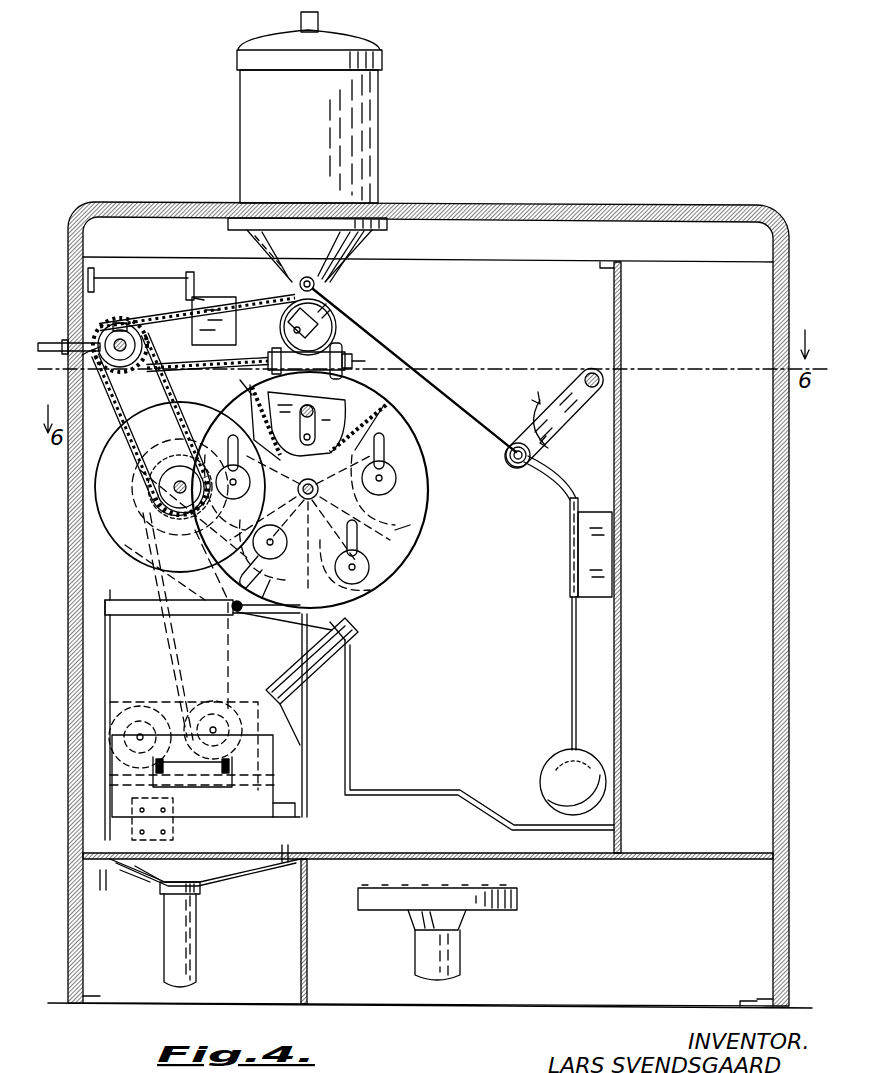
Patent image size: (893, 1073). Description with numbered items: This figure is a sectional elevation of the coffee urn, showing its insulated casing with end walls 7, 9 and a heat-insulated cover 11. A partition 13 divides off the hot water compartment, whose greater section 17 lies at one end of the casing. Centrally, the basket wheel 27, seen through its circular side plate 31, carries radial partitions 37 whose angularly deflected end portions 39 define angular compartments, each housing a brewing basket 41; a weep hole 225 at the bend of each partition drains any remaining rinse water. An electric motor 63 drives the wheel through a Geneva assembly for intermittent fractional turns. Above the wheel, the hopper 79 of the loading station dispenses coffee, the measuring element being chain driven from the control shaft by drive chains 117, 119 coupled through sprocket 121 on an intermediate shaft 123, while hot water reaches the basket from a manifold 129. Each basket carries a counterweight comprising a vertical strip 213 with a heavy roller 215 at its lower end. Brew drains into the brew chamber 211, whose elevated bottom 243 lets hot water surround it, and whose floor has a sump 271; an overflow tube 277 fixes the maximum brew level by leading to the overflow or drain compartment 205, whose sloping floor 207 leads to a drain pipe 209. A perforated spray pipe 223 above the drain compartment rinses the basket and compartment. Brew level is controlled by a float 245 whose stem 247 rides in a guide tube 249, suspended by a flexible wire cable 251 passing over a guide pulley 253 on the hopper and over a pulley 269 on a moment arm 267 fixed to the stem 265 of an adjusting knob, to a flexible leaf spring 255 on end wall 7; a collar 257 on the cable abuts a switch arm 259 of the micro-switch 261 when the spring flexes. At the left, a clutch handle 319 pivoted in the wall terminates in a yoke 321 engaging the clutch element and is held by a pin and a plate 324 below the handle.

The end wall 7 is at (70, 466).
The end wall 9 is at (788, 464).
The cover 11 is at (570, 213).
The partition 13 is at (621, 436).
The greater section 17 is at (755, 565).
The basket wheel 27 is at (324, 490).
The circular side plate 31 is at (364, 398).
The radial partitions 37 is at (358, 426).
The end portions 39 is at (248, 398).
The brewing basket 41 is at (306, 424).
The electric motor 63 is at (140, 706).
The hopper 79 is at (307, 147).
The drive chain 117 is at (125, 420).
The drive chain 119 is at (190, 366).
The sprocket 121 is at (118, 323).
The intermediate shaft 123 is at (122, 362).
The manifold 129 is at (314, 368).
The overflow or drain compartment 205 is at (202, 721).
The floor 207 is at (214, 880).
The drain pipe 209 is at (198, 926).
The brew chamber 211 is at (479, 735).
The strip 213 is at (348, 538).
The roller 215 is at (368, 570).
The spray pipe 223 is at (242, 612).
The weep hole 225 is at (330, 400).
The elevated bottom 243 is at (408, 797).
The float 245 is at (558, 768).
The stem 247 is at (572, 641).
The guide tube 249 is at (570, 537).
The flexible wire cable 251 is at (466, 397).
The guide pulley 253 is at (317, 288).
The flexible leaf spring 255 is at (94, 275).
The nut or collar 257 is at (186, 276).
The switch arm 259 is at (192, 298).
The micro-switch 261 is at (264, 326).
The stem 265 is at (586, 374).
The moment arm 267 is at (575, 412).
The pulley 269 is at (530, 452).
The sump 271 is at (576, 822).
The overflow tube 277 is at (312, 680).
The handle 319 is at (55, 336).
The yoke 321 is at (100, 362).
The plate 324 is at (64, 356).